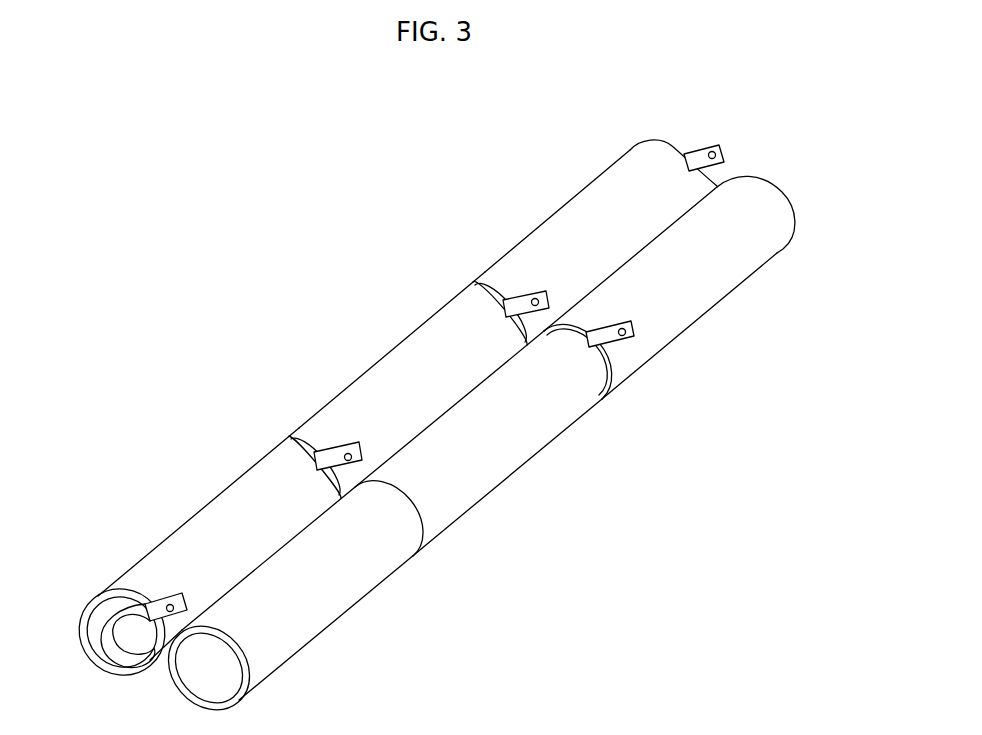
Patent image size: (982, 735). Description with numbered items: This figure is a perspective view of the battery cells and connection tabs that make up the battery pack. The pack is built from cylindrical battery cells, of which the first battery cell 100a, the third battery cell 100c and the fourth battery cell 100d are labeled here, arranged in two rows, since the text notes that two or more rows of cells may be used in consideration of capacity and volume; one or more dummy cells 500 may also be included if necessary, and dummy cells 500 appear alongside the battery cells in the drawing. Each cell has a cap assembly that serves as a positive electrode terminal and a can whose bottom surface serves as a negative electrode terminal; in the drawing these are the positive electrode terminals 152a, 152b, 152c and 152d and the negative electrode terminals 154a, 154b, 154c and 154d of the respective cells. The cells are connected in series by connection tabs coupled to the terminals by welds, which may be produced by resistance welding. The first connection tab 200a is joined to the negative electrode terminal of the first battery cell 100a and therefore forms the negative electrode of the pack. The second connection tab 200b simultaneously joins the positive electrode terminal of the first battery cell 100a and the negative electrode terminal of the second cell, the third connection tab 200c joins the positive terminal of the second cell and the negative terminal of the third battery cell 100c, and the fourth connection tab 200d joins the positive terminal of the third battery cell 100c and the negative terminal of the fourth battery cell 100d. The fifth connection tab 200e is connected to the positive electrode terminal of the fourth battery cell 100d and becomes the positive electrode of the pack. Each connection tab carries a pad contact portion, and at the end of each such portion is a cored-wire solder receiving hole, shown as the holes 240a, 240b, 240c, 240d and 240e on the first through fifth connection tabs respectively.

The first battery cell 100a is at (188, 527).
The third battery cell 100c is at (582, 207).
The fourth battery cell 100d is at (723, 277).
The first electrode terminal 152a is at (257, 460).
The first electrode terminal 152b is at (440, 305).
The first electrode terminal 152c is at (659, 143).
The first electrode terminal 152d is at (618, 373).
The second electrode terminal 154a is at (88, 656).
The second electrode terminal 154b is at (286, 445).
The second electrode terminal 154c is at (468, 292).
The second electrode terminal 154d is at (788, 185).
The first connection tab 200a is at (124, 589).
The second connection tab 200b is at (292, 432).
The third connection tab 200c is at (474, 279).
The fourth connection tab 200d is at (715, 126).
The fifth connection tab 200e is at (646, 363).
The cored-wire solder receiving hole 240a is at (170, 600).
The cored-wire solder receiving hole 240b is at (345, 452).
The cored-wire solder receiving hole 240c is at (535, 295).
The cored-wire solder receiving hole 240d is at (720, 143).
The cored-wire solder receiving hole 240e is at (635, 330).
The dummy cell 500 is at (515, 447).